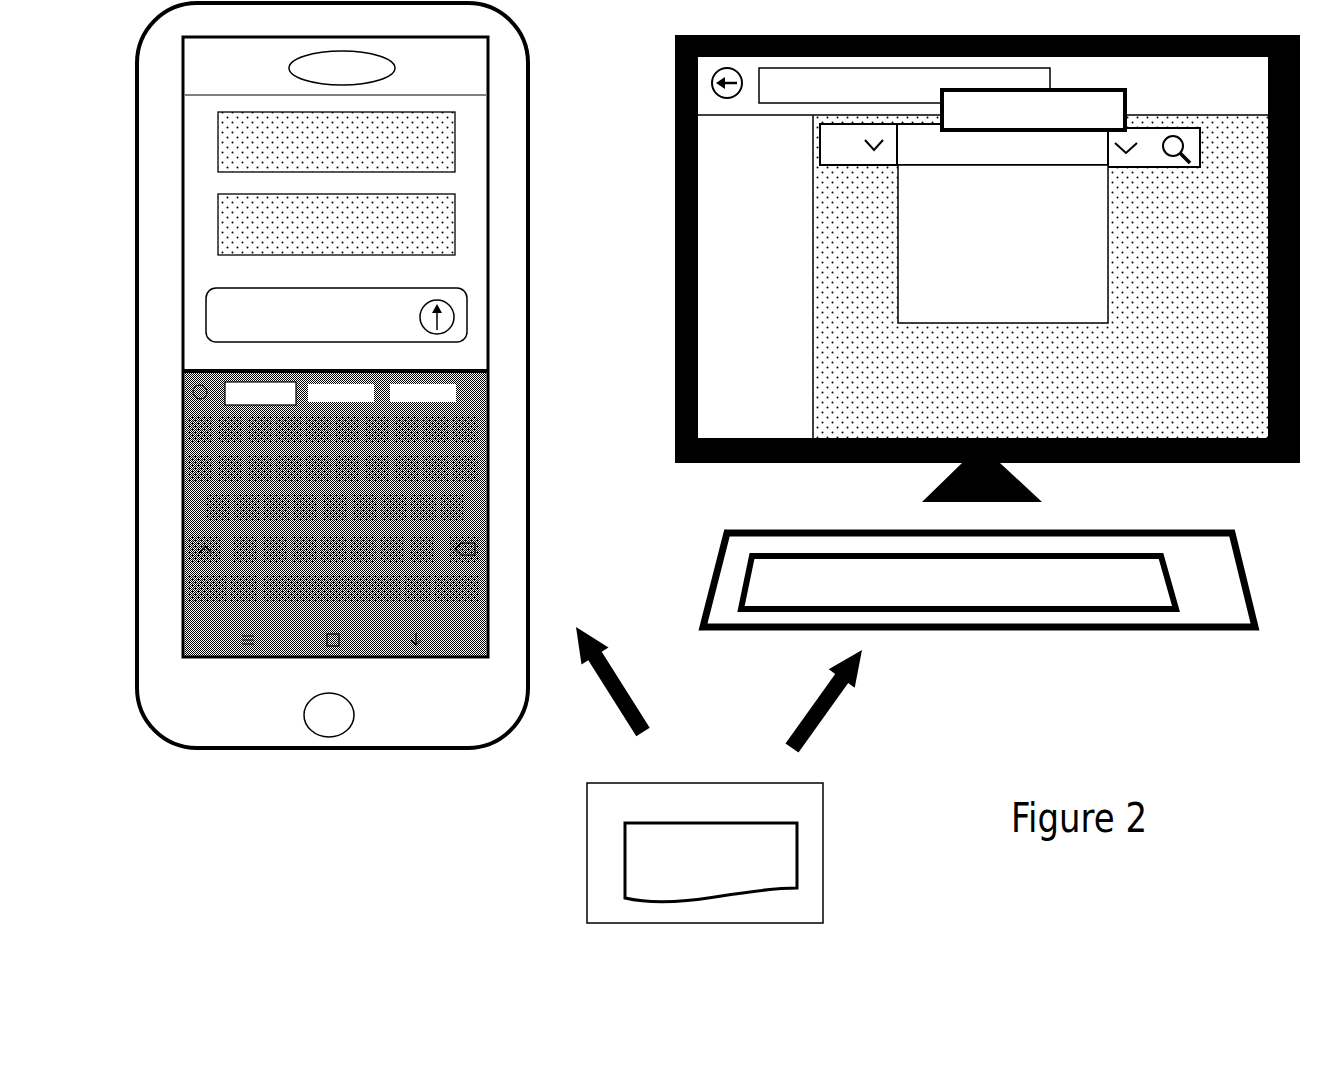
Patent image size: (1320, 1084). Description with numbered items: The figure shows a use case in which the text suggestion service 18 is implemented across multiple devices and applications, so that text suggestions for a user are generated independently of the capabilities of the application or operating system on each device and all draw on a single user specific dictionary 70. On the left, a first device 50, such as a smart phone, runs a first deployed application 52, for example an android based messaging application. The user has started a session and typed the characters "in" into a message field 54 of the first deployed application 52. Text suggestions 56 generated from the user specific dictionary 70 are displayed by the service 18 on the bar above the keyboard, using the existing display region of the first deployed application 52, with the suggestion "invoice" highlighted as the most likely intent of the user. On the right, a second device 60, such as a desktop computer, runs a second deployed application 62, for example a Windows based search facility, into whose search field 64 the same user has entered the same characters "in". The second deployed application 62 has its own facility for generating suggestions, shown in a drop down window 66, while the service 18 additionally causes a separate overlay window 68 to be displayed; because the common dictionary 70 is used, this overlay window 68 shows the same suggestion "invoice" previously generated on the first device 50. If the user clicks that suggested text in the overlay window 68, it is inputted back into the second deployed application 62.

The text suggestion service 18 is at (705, 853).
The first device 50 is at (497, 745).
The first deployed application 52 is at (473, 219).
The message field 54 is at (383, 302).
The text suggestions 56 is at (462, 398).
The second device 60 is at (987, 372).
The second deployed application 62 is at (763, 182).
The search field 64 is at (910, 157).
The drop down window 66 is at (1003, 244).
The overlay window 68 is at (1108, 108).
The user specific dictionary 70 is at (711, 862).